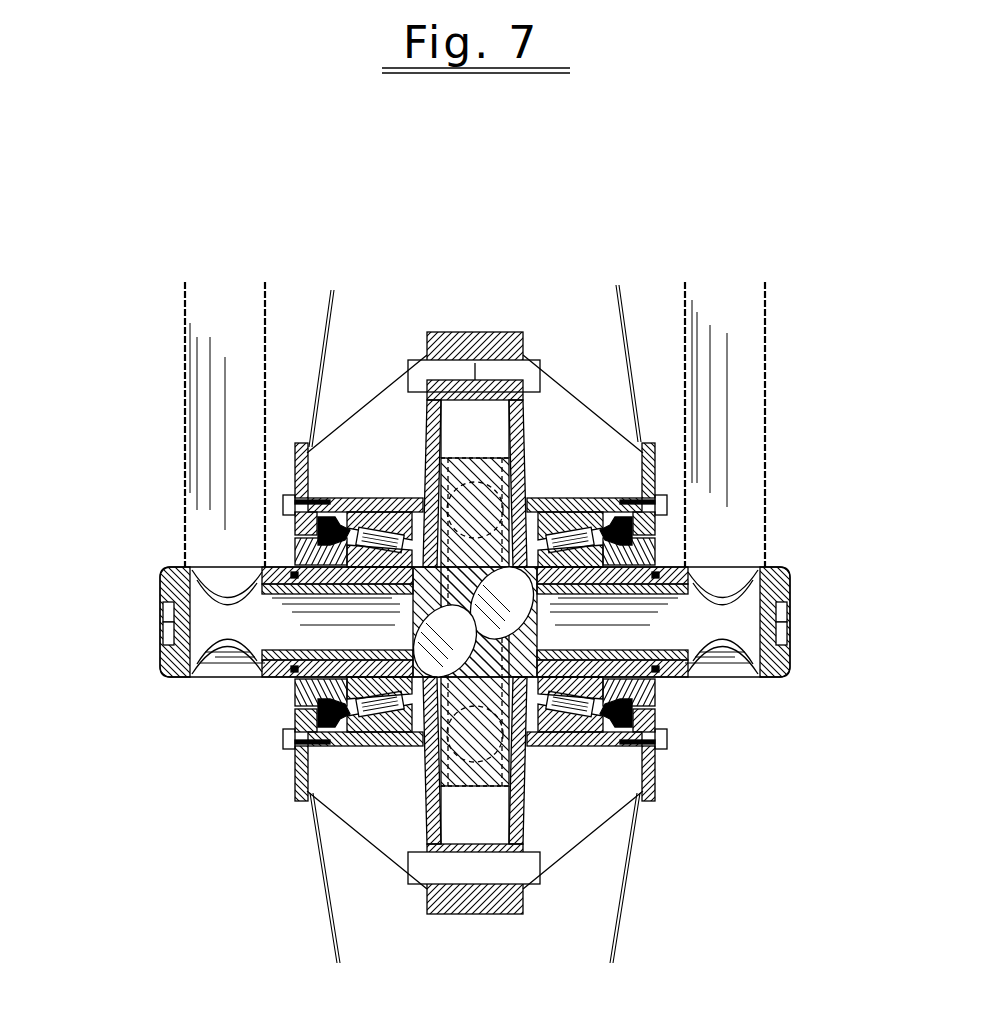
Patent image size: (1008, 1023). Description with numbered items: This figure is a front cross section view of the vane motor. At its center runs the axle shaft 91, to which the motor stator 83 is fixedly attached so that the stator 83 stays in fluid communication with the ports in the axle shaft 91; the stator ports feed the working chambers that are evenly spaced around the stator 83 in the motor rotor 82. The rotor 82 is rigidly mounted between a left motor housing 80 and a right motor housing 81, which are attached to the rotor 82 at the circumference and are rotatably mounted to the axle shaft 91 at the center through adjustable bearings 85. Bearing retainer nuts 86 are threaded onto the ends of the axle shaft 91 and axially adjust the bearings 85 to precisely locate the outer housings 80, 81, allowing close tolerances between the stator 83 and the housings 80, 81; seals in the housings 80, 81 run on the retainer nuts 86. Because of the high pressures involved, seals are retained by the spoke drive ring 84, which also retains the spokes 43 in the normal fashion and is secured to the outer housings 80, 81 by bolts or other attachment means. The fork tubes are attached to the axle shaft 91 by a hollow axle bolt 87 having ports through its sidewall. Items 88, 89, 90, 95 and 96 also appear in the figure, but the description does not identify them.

The spokes 43 is at (613, 943).
The left motor housing 80 is at (427, 417).
The right motor housing 81 is at (543, 417).
The motor rotor 82 is at (533, 920).
The motor stator 83 is at (480, 813).
The spoke drive ring 84 is at (657, 477).
The bearings 85 is at (363, 497).
The bearing retainer nuts 86 is at (293, 540).
The hollow axle bolt 87 is at (165, 570).
The tube 88 is at (247, 367).
The washer 89 is at (285, 738).
The bearing race / washer 90 is at (300, 552).
The axle shaft 91 is at (660, 682).
The bolt core 95 is at (480, 900).
The roller ball 96 is at (520, 618).